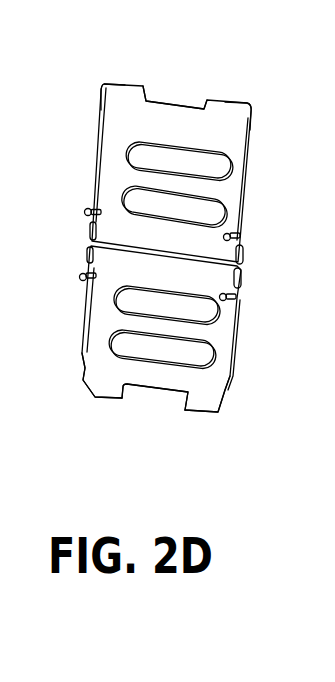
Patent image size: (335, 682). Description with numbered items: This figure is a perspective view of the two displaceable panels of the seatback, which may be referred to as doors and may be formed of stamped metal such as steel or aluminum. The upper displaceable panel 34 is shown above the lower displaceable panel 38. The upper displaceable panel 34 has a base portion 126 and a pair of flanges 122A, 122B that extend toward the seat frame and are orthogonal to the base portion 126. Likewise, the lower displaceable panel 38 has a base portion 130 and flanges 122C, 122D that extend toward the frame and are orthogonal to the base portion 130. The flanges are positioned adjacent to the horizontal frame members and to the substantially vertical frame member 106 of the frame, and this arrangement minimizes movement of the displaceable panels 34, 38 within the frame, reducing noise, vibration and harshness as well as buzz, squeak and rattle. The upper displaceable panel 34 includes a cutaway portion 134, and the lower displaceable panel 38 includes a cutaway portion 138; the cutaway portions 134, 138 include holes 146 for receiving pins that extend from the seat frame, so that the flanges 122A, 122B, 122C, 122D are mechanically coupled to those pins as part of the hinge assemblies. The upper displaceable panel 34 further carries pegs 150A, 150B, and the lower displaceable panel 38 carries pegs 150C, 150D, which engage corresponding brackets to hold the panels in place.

The upper displaceable panel 34 is at (197, 133).
The lower displaceable panel 38 is at (218, 348).
The flange 122A is at (97, 100).
The flange 122B is at (253, 127).
The flange 122C is at (83, 343).
The flange 122D is at (230, 372).
The cutaway portion 134 is at (173, 100).
The cutaway portion 138 is at (163, 402).
The base portion 126 is at (183, 185).
The base portion 130 is at (158, 325).
The peg 150A is at (85, 207).
The peg 150B is at (238, 228).
The peg 150C is at (83, 283).
The peg 150D is at (238, 296).
The hole 146 is at (5, 152).
The substantially vertical frame member 106 is at (15, 281).